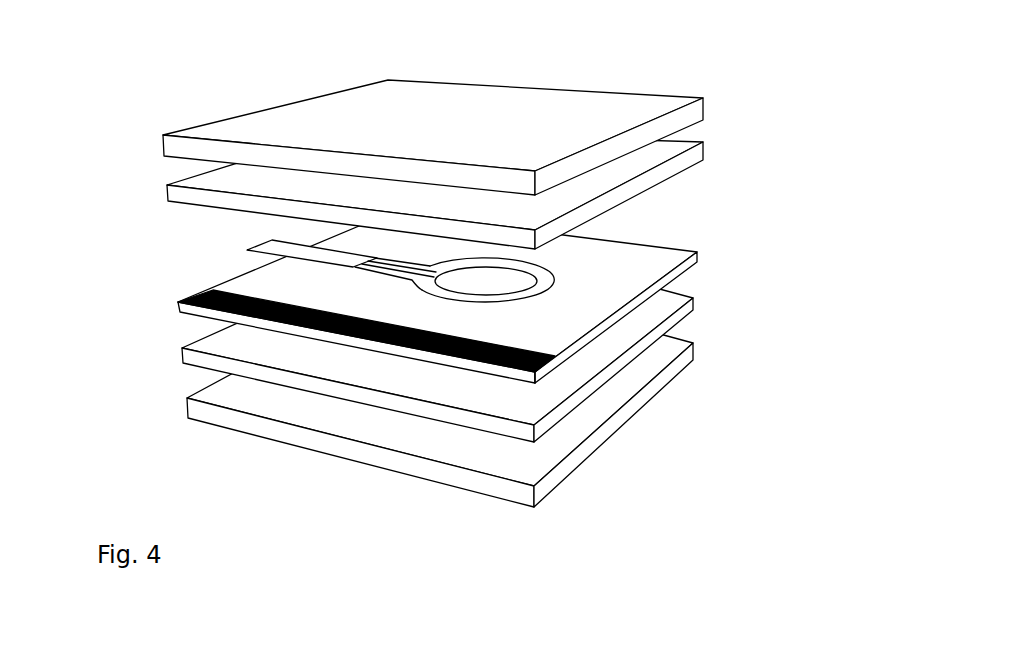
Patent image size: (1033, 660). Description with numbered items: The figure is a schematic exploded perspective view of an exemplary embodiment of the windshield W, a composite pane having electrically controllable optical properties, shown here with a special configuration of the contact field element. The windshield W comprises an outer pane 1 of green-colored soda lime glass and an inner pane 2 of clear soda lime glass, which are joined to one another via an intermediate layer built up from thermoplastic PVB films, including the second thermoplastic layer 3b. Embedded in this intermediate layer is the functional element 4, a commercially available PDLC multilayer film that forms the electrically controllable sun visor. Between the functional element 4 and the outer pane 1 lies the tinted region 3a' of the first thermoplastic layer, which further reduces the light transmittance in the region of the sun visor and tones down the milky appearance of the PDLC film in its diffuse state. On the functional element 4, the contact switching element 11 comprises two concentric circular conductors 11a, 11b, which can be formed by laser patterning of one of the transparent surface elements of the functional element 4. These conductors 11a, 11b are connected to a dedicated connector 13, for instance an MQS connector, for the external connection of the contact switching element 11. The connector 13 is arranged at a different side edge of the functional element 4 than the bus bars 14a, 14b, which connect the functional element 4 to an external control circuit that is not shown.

The windshield W is at (434, 260).
The outer pane 1 is at (630, 408).
The inner pane 2 is at (705, 99).
The tinted region 3a' is at (480, 336).
The second thermoplastic layer 3b is at (704, 146).
The functional element 4 is at (434, 226).
The contact switching element 11 is at (482, 171).
The circular conductor 11a is at (313, 159).
The circular conductor 11b is at (413, 270).
The connector 13 is at (247, 250).
The bus bar 14a is at (553, 361).
The bus bar 14b is at (547, 374).